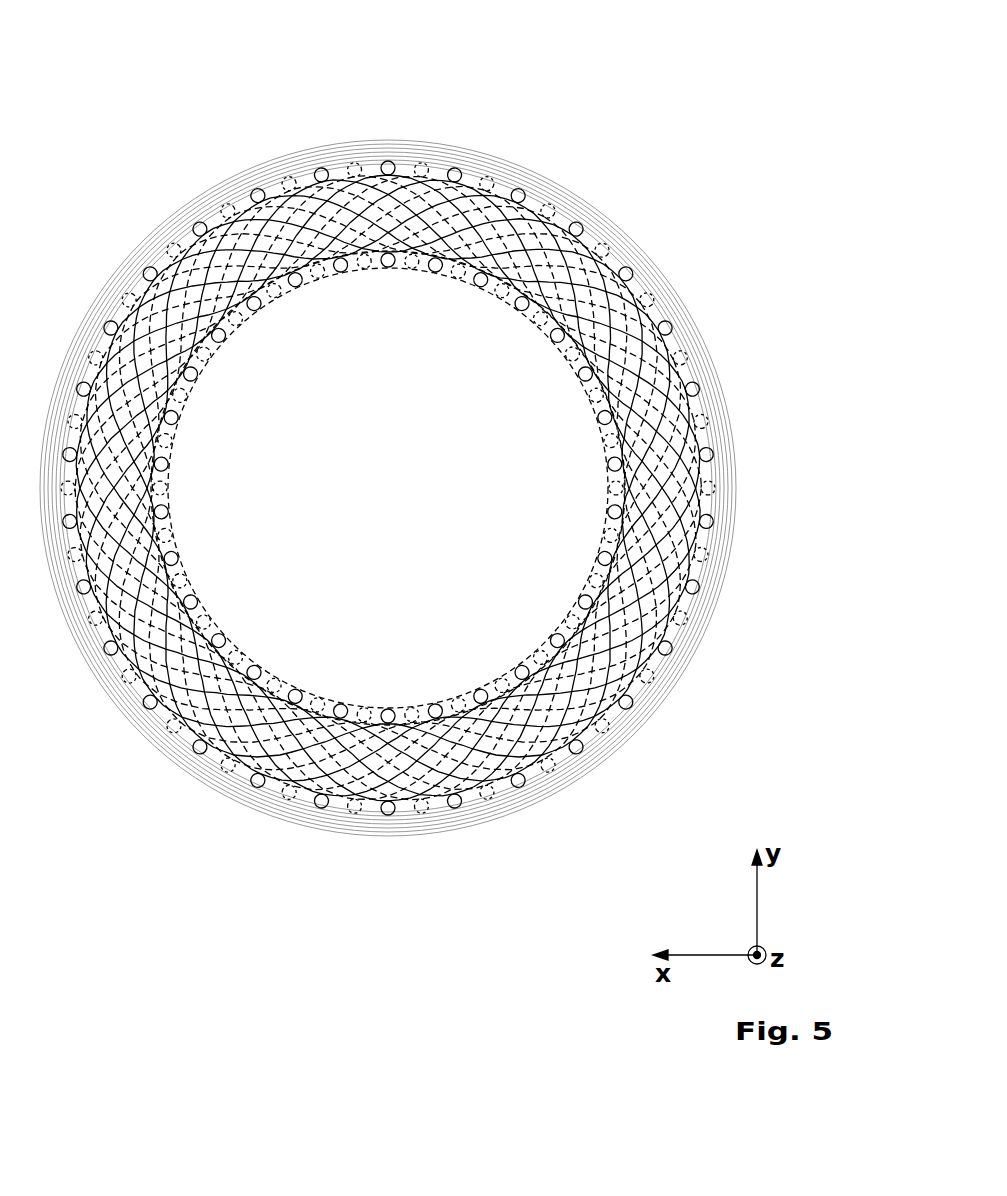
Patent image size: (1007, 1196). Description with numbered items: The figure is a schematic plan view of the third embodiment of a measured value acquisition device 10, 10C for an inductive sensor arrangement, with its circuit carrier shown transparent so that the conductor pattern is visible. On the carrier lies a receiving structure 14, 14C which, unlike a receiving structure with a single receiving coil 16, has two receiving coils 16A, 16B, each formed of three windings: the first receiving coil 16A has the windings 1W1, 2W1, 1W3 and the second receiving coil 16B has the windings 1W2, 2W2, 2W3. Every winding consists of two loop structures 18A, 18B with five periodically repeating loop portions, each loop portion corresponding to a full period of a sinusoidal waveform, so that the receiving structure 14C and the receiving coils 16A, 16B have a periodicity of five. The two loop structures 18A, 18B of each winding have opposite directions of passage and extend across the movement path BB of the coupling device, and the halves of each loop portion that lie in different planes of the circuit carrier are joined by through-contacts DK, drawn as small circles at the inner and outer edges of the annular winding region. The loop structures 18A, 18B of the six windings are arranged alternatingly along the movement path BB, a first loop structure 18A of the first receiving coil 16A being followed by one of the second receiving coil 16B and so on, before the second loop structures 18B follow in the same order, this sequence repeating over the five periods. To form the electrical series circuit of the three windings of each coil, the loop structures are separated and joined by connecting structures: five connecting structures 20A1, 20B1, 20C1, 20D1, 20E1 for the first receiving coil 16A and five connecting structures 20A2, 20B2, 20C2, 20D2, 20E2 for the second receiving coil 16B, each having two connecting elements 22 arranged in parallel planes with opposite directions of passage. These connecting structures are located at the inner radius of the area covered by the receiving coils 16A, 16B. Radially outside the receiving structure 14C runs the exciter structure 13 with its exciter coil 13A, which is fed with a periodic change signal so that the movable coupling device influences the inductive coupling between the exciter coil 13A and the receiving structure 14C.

The measured value acquisition device 10 is at (433, 450).
The measured value acquisition device 10C is at (433, 450).
The receiving coil 16 is at (386, 420).
The first receiving coil 16A is at (254, 78).
The second receiving coil 16B is at (113, 136).
The receiving structure 14 is at (388, 488).
The receiving structure 14C is at (135, 257).
The exciter structure 13 is at (321, 544).
The exciter coil 13A is at (105, 733).
The first loop structure 18A is at (411, 473).
The second loop structure 18B is at (410, 472).
The first winding of the first receiving coil 1W1 is at (468, 177).
The second winding of the first receiving coil 2W1 is at (503, 237).
The first winding of the second receiving coil 1W2 is at (543, 197).
The second winding of the second receiving coil 2W2 is at (557, 223).
The third winding of the first receiving coil 1W3 is at (605, 222).
The third winding of the second receiving coil 2W3 is at (610, 260).
The connecting element 22 is at (215, 338).
The connecting structure 20A1 is at (585, 424).
The connecting structure 20A2 is at (505, 323).
The connecting structure 20B1 is at (510, 648).
The connecting structure 20B2 is at (577, 574).
The connecting structure 20C1 is at (432, 688).
The connecting structure 20C2 is at (328, 683).
The connecting structure 20D1 is at (185, 474).
The connecting structure 20D2 is at (229, 610).
The connecting structure 20E1 is at (389, 283).
The connecting structure 20E2 is at (240, 355).
The through-contact DK is at (388, 707).
The movement path BB is at (607, 716).